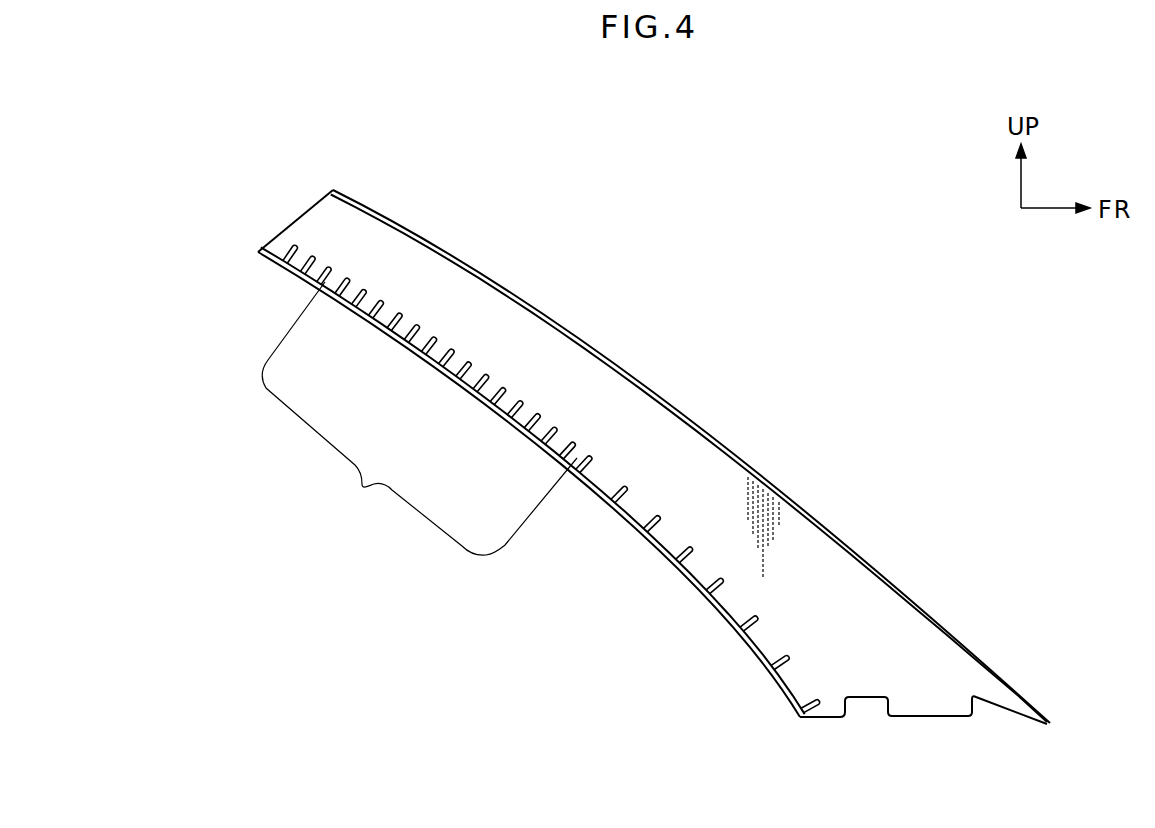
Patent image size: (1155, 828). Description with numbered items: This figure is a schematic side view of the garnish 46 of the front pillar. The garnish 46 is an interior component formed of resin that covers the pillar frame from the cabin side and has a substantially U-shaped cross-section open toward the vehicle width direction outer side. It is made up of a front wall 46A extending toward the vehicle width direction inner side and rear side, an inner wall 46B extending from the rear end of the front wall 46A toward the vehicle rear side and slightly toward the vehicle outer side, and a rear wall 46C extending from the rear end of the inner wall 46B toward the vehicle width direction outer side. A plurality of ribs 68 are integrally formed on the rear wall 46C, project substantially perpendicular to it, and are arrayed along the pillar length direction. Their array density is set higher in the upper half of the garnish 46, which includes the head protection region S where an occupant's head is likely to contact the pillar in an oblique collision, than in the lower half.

The garnish 46 is at (611, 401).
The front wall 46A is at (475, 265).
The inner wall 46B is at (307, 210).
The rear wall 46C is at (264, 245).
The ribs 68 is at (624, 481).
The head protection region S is at (419, 418).